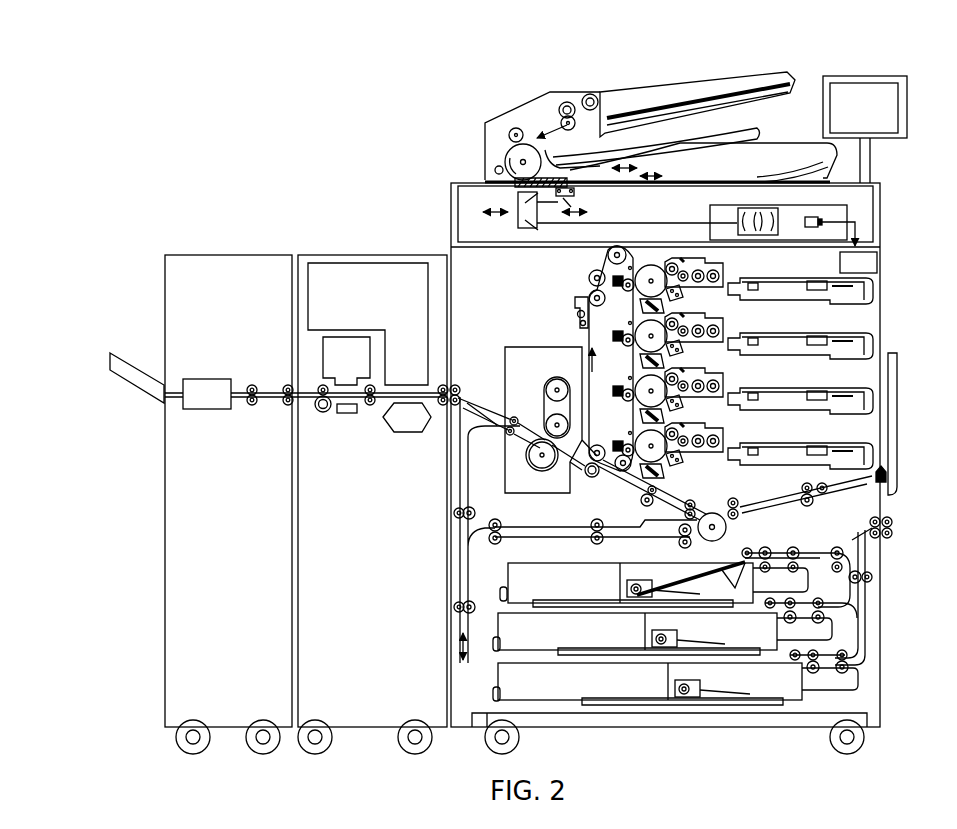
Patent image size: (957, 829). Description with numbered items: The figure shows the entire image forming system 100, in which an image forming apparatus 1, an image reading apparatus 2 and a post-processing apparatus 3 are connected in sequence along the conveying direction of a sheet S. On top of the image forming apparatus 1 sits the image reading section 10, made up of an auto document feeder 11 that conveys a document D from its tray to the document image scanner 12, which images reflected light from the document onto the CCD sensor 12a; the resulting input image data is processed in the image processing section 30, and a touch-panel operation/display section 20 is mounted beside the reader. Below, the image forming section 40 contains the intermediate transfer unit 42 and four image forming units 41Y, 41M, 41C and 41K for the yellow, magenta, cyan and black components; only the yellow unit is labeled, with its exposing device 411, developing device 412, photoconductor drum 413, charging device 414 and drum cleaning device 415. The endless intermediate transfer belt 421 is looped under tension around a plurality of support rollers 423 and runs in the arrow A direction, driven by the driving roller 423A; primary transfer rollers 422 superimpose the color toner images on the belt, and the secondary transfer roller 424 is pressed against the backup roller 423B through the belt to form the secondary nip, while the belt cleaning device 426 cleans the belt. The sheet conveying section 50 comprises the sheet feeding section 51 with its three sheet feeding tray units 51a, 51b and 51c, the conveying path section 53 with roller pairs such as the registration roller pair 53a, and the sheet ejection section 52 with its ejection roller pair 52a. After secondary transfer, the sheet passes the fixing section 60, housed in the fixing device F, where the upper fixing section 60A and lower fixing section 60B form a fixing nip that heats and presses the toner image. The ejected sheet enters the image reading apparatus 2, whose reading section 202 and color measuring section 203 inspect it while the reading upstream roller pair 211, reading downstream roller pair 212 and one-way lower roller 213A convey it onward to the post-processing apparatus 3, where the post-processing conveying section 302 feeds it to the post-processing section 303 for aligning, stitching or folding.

The image forming system 100 is at (296, 60).
The image forming apparatus 1 is at (652, 69).
The document D is at (712, 88).
The image reading section 10 is at (428, 122).
The auto document feeder 11 is at (483, 146).
The document image scanner 12 is at (470, 182).
The charge coupled device (CCD) sensor 12a is at (823, 220).
The operation/display section 20 is at (856, 76).
The image processing section 30 is at (878, 253).
The image reading apparatus 2 is at (371, 254).
The post-processing apparatus 3 is at (241, 254).
The reading section 202 is at (403, 279).
The color measuring section 203 is at (343, 346).
The reading upstream roller pair 211 is at (443, 405).
The reading downstream roller pair 212 is at (372, 404).
The lower roller 213A is at (322, 412).
The post-processing conveying section 302 is at (270, 382).
The post-processing section 303 is at (204, 378).
The image forming section 40 is at (530, 303).
The image forming unit for Y component 41Y is at (742, 302).
The image forming unit for M component 41M is at (742, 357).
The image forming unit for C component 41C is at (742, 412).
The image forming unit for K component 41K is at (742, 467).
The exposing device 411 is at (778, 279).
The developing device 412 is at (724, 265).
The photoconductor drum 413 is at (647, 266).
The charging device 414 is at (682, 296).
The drum cleaning device 415 is at (640, 311).
The intermediate transfer unit 42 is at (555, 274).
The intermediate transfer belt 421 is at (588, 340).
The primary transfer roller 422 is at (629, 292).
The support rollers 423 is at (598, 272).
The driving roller 423A is at (620, 471).
The backup roller 423B is at (595, 462).
The secondary transfer roller 424 is at (590, 477).
The belt cleaning device 426 is at (578, 304).
The arrow A direction A is at (602, 360).
The sheet conveying section 50 is at (874, 569).
The sheet feeding section 51 is at (580, 557).
The sheet feeding tray unit 51a is at (515, 587).
The sheet feeding tray unit 51b is at (515, 641).
The sheet feeding tray unit 51c is at (515, 689).
The sheet ejection section 52 is at (457, 379).
The conveyance roller pair (ejection roller pair) 52a is at (458, 397).
The conveying path section 53 is at (706, 506).
The registration roller pair 53a is at (668, 487).
The fixing section 60 is at (538, 348).
The upper fixing section 60A is at (531, 396).
The lower fixing section 60B is at (510, 476).
The fixing device F is at (527, 368).
The sheet S is at (687, 563).